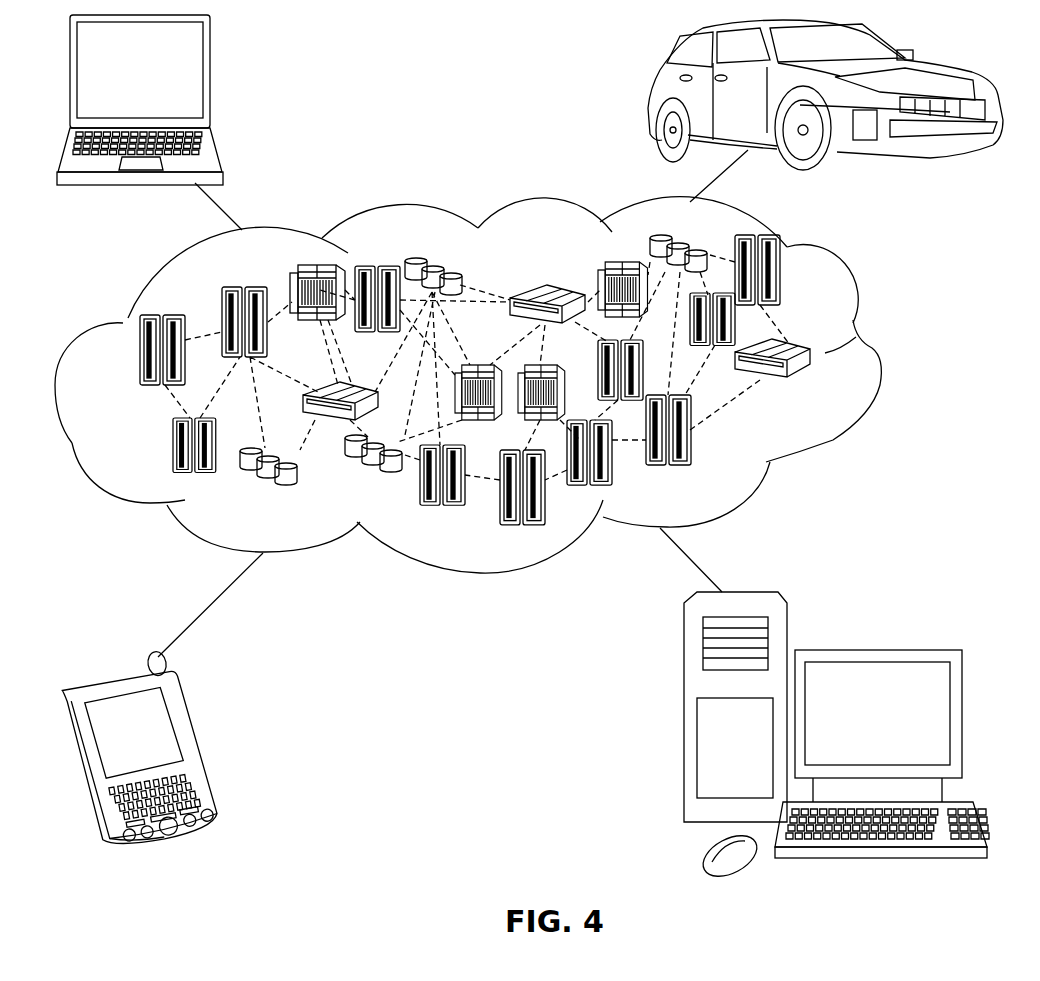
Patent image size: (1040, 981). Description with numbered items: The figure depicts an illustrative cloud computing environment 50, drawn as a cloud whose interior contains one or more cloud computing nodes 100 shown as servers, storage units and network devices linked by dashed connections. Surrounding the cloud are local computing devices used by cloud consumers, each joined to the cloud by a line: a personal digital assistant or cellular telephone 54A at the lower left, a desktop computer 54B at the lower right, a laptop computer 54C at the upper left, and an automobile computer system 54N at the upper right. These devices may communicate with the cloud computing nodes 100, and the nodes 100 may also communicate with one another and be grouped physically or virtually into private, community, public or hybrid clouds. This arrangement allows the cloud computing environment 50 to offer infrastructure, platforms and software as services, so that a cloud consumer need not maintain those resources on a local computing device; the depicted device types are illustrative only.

The cloud computing environment 50 is at (875, 353).
The cloud computing nodes 100 is at (816, 386).
The personal digital assistant or cellular telephone 54A is at (200, 745).
The desktop computer 54B is at (875, 647).
The laptop computer 54C is at (212, 80).
The automobile computer system 54N is at (655, 100).